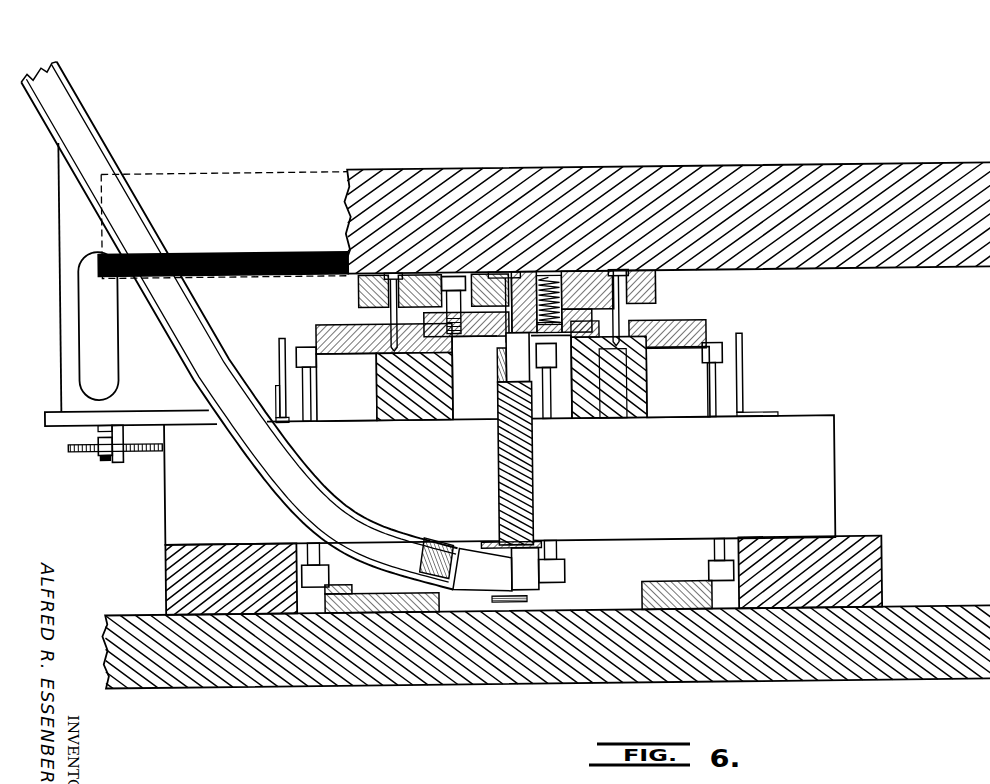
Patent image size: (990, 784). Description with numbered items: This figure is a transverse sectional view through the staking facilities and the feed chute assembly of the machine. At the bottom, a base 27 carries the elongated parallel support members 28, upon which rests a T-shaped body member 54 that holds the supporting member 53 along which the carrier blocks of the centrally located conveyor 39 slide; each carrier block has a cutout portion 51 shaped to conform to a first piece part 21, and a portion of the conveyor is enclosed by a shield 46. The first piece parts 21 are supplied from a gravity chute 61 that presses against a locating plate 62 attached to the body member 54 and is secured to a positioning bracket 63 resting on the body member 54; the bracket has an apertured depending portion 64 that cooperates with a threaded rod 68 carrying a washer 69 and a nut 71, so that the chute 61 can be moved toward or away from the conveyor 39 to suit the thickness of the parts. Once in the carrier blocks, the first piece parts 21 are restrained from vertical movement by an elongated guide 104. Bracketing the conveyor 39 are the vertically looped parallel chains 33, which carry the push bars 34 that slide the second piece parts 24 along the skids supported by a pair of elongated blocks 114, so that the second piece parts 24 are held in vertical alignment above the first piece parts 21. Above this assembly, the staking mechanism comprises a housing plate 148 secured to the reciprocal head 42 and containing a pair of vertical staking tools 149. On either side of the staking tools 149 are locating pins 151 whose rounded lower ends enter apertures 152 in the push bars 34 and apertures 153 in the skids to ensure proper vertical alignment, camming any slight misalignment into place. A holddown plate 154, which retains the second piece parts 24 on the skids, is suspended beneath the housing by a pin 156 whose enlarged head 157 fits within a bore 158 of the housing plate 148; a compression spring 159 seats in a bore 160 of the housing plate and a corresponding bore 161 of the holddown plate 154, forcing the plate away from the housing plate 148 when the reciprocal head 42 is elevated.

The first piece parts 21 is at (499, 372).
The second piece parts 24 is at (492, 326).
The base 27 is at (140, 643).
The support members 28 is at (180, 569).
The chains 33 is at (303, 342).
The push bars 34 is at (622, 590).
The conveyor 39 is at (560, 372).
The reciprocal head 42 is at (820, 166).
The shield 46 is at (280, 350).
The cutout portion 51 is at (512, 568).
The supporting member 53 is at (503, 402).
The body member 54 is at (832, 437).
The gravity chute 61 is at (116, 154).
The locating plate 62 is at (495, 541).
The positioning bracket 63 is at (60, 313).
The apertured depending portion 64 is at (118, 460).
The threaded rod 68 is at (72, 450).
The washer 69 is at (106, 458).
The nut 71 is at (98, 428).
The elongated guide 104 is at (512, 612).
The elongated blocks 114 is at (425, 407).
The housing plate 148 is at (658, 290).
The staking tools 149 is at (504, 274).
The locating pins 151 is at (443, 300).
The apertures 152 is at (430, 323).
The apertures 153 is at (398, 352).
The holddown plate 154 is at (598, 274).
The pin 156 is at (445, 298).
The enlarged head 157 is at (455, 272).
The bore 158 is at (462, 272).
The compression spring 159 is at (550, 273).
The bore 160 is at (578, 273).
The bore 161 is at (587, 408).